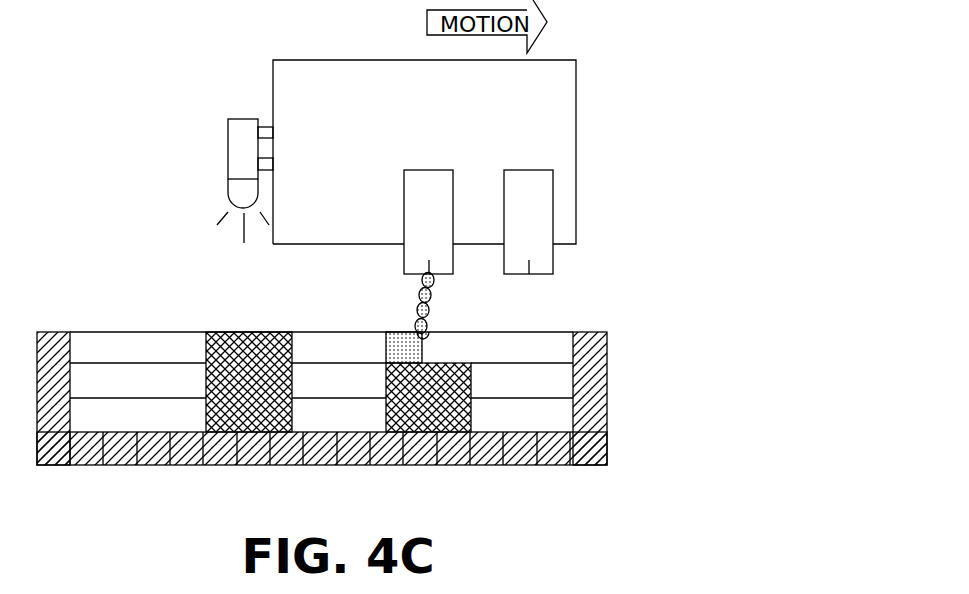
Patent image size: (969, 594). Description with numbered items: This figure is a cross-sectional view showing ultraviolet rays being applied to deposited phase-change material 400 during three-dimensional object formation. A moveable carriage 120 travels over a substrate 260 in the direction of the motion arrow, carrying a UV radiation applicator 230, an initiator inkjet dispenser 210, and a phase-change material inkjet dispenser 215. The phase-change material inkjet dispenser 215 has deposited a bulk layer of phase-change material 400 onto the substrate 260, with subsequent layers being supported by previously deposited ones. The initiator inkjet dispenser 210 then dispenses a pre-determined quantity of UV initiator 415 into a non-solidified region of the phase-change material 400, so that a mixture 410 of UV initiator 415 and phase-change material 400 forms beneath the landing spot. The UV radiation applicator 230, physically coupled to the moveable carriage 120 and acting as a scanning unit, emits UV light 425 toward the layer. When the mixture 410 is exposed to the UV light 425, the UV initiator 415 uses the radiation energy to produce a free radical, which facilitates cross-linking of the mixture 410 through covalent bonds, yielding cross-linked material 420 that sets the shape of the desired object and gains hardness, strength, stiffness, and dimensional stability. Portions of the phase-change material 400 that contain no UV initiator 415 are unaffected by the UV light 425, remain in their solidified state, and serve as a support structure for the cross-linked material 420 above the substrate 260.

The moveable carriage 120 is at (408, 104).
The UV radiation applicator 230 is at (230, 180).
The UV light 425 is at (190, 217).
The initiator inkjet dispenser 210 is at (440, 222).
The phase-change material inkjet dispenser 215 is at (528, 223).
The phase-change material 400 is at (519, 332).
The substrate 260 is at (485, 465).
The cross-linked material 420 is at (237, 332).
The mixture 410 is at (385, 348).
The UV initiator 415 is at (418, 313).